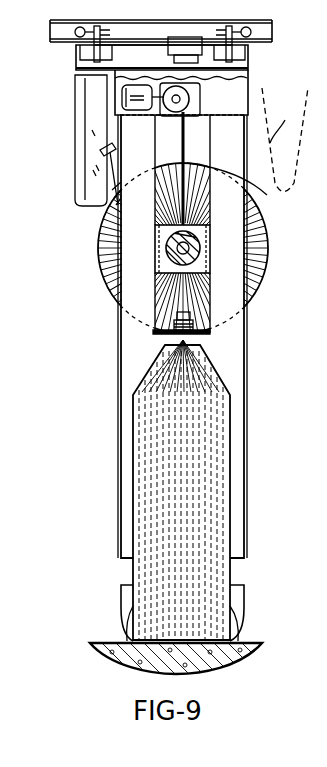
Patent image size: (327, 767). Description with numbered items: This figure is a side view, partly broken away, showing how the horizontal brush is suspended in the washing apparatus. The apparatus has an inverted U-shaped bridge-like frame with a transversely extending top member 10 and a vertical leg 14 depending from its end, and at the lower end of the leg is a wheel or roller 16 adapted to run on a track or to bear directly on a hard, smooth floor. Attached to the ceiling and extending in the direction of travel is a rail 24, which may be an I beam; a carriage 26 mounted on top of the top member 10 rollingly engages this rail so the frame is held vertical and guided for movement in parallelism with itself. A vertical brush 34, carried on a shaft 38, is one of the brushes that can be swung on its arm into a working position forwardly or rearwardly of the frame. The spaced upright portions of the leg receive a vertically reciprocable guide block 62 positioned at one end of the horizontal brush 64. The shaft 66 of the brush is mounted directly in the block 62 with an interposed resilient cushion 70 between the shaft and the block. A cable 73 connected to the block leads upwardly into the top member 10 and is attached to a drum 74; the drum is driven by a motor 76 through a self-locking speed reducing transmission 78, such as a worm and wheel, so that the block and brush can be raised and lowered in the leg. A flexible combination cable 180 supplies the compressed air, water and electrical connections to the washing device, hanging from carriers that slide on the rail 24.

The top member 10 is at (125, 80).
The vertical leg 14 is at (112, 478).
The wheels or rollers 16 is at (120, 618).
The rail 24 is at (50, 28).
The carriage 26 is at (60, 62).
The vertical brush 34 is at (218, 489).
The shaft 38 is at (192, 314).
The guide block 62 is at (167, 274).
The horizontal brush 64 is at (100, 256).
The shaft 66 is at (172, 258).
The resilient cushion 70 is at (200, 262).
The cable 73 is at (222, 168).
The drum 74 is at (190, 100).
The motor 76 is at (125, 95).
The self-locking speed reducing transmission 78 is at (163, 88).
The flexible combination cable 180 is at (285, 140).